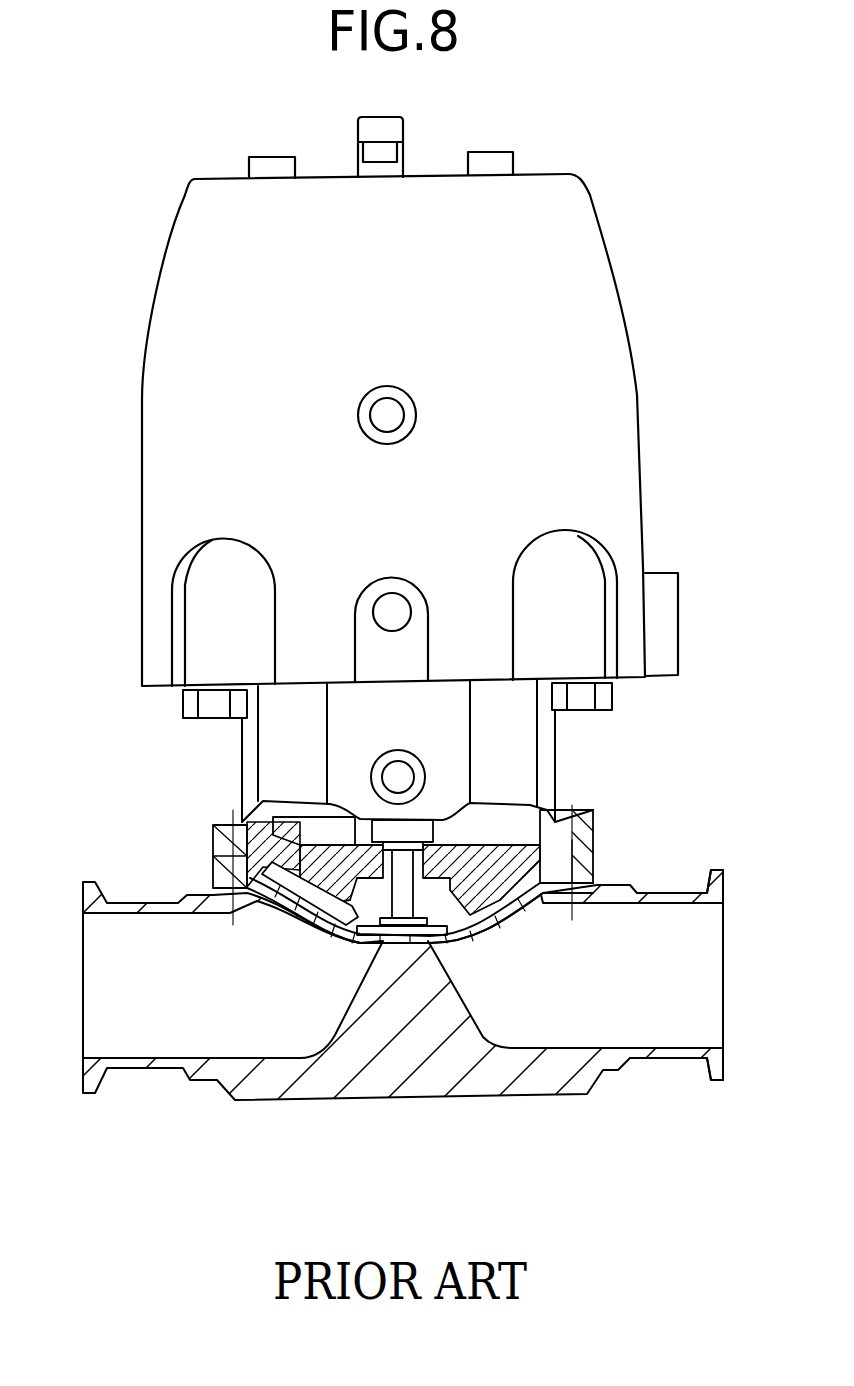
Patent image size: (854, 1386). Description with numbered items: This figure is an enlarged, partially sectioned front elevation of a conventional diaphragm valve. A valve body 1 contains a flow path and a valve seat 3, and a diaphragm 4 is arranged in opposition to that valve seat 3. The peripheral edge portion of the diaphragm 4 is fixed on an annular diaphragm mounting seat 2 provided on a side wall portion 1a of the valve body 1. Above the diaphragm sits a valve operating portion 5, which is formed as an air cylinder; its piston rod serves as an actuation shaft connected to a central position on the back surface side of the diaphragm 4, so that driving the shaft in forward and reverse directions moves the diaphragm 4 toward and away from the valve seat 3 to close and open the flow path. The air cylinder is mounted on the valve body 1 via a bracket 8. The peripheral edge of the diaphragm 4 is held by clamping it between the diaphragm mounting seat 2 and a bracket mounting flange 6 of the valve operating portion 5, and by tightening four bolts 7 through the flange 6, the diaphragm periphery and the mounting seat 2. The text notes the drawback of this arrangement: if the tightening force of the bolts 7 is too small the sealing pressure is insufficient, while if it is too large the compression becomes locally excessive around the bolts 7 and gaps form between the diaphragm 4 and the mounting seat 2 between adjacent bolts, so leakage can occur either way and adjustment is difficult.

The valve body 1 is at (122, 888).
The side wall portion 1a is at (643, 892).
The diaphragm mounting seat 2 is at (597, 883).
The valve seat 3 is at (480, 936).
The diaphragm 4 is at (304, 931).
The valve operating portion 5 is at (634, 310).
The bracket mounting flange 6 is at (232, 821).
The bolts 7 is at (212, 848).
The bracket 8 is at (497, 757).